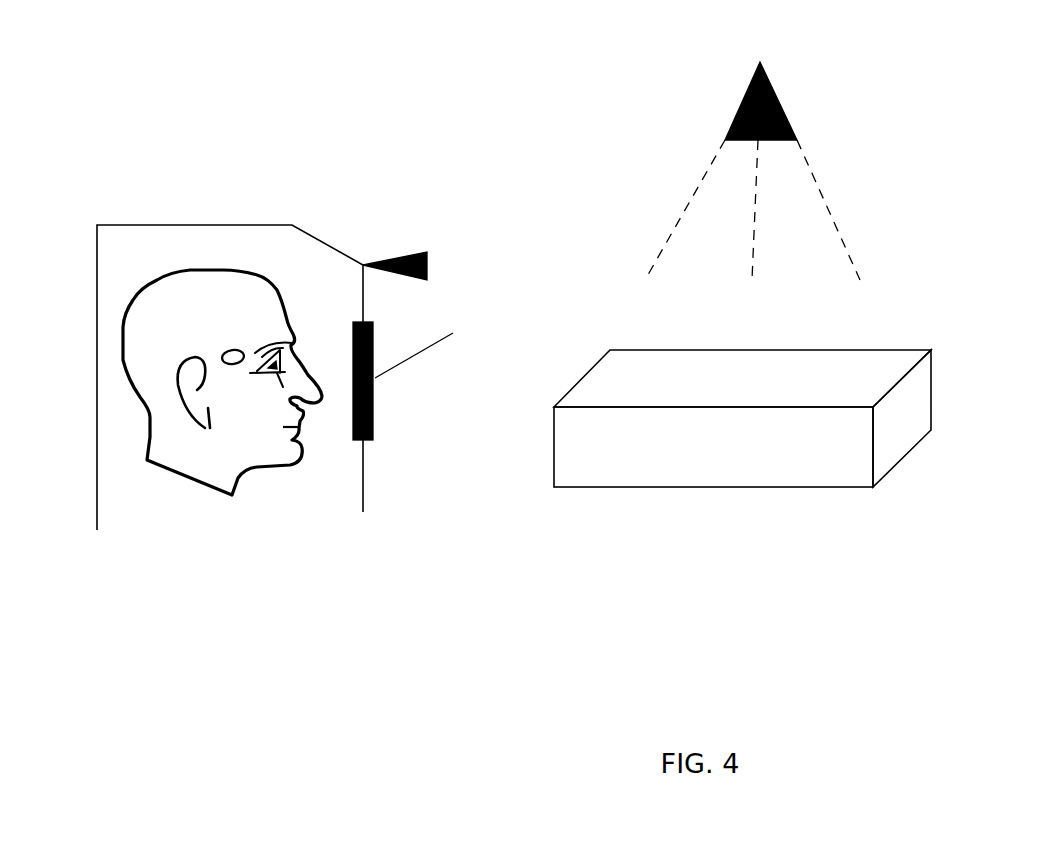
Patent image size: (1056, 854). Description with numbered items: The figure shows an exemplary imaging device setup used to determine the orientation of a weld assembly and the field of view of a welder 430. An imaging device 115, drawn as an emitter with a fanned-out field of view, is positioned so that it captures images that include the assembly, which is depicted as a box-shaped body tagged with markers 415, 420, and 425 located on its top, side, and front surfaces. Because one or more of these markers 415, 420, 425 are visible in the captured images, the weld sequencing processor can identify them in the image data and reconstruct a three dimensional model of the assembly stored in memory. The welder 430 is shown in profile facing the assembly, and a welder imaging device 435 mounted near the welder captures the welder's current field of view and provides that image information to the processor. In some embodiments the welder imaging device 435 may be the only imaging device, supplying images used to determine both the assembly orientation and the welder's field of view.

The imaging device 115 is at (775, 92).
The marker 415 is at (629, 369).
The marker 420 is at (913, 403).
The marker 425 is at (576, 440).
The welder 430 is at (190, 480).
The welder imaging device 435 is at (402, 253).